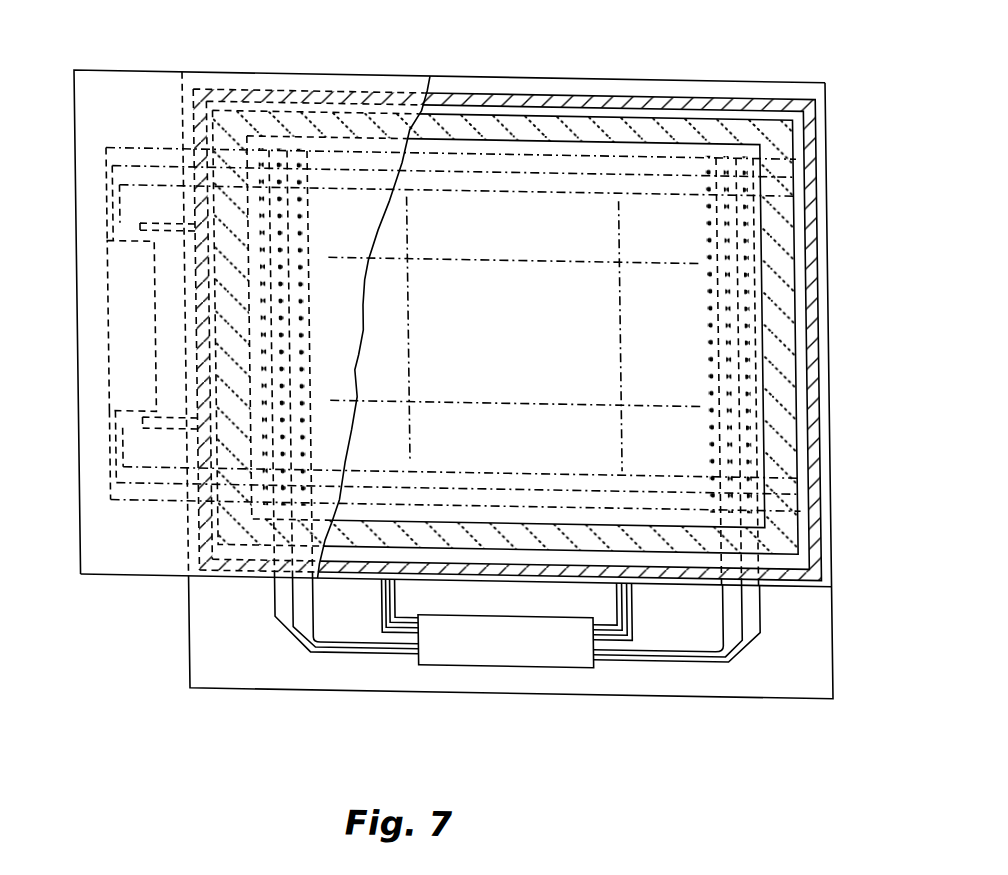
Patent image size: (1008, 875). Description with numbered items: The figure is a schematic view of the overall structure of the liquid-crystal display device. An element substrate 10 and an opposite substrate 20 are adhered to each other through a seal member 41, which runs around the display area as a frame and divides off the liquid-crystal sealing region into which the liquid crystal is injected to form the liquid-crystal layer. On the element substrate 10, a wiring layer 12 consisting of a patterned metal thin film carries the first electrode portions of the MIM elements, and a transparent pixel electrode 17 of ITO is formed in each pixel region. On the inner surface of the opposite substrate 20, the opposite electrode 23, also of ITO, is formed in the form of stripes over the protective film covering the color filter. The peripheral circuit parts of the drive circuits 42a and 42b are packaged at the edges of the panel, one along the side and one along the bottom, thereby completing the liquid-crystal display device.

The element substrate 10 is at (223, 664).
The opposite substrate 20 is at (124, 556).
The seal member 41 is at (640, 90).
The opposite electrode 23 is at (468, 160).
The pixel electrode 17 is at (303, 236).
The wiring layer 12 is at (316, 364).
The drive circuit 42a is at (118, 276).
The drive circuit 42b is at (523, 652).